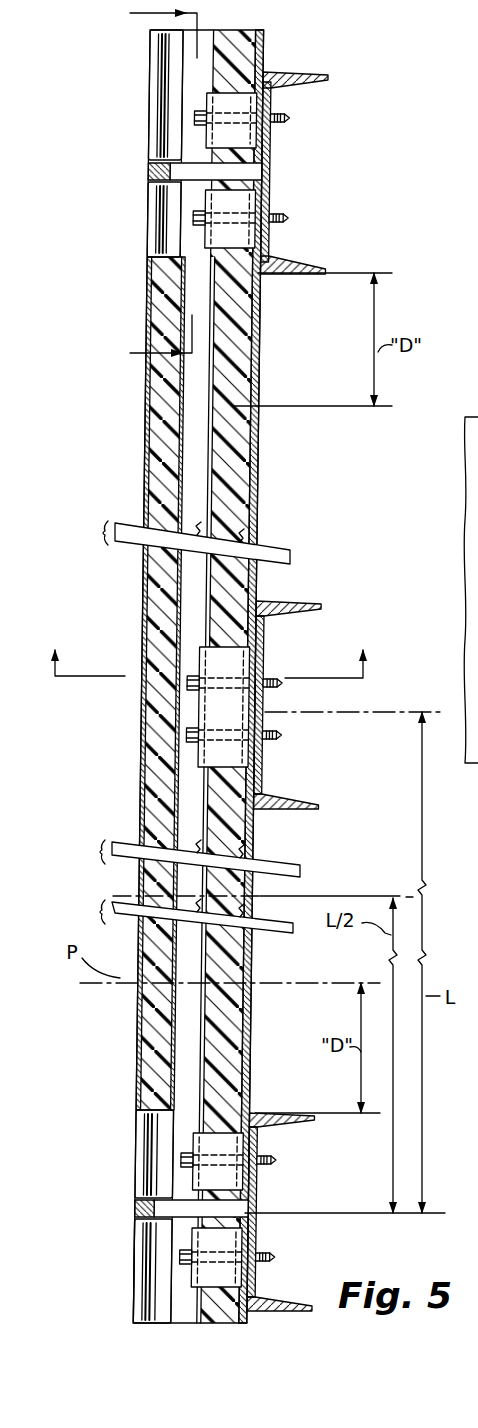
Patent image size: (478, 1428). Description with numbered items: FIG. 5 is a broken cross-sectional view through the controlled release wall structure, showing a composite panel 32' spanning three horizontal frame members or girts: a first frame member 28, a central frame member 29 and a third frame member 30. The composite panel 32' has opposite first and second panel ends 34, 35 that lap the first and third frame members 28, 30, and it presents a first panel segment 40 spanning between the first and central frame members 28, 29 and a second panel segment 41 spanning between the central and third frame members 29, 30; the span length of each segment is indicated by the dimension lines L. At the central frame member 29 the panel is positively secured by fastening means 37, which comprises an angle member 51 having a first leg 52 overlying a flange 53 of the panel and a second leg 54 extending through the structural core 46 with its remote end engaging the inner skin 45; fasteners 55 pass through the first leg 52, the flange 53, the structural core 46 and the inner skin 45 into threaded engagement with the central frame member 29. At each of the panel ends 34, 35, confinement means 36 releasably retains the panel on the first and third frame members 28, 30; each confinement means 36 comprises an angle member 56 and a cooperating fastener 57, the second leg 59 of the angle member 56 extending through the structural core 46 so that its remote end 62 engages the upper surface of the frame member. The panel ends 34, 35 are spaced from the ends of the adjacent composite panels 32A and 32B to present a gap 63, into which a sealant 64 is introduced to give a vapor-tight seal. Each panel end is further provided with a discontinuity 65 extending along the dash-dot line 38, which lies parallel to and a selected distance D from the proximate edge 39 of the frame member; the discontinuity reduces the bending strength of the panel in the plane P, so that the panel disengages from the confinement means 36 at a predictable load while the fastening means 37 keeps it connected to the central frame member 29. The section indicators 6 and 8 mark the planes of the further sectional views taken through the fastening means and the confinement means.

The section line 6- 6 is at (204, 645).
The section line 8- 8 is at (152, 182).
The first frame member 28 is at (265, 1300).
The central frame member 29 is at (293, 612).
The third frame member 30 is at (300, 74).
The composite panel 32A is at (146, 62).
The composite panel 32B is at (130, 1304).
The composite panel 32' is at (118, 683).
The first panel end 34 is at (150, 88).
The second panel end 35 is at (150, 255).
The confinement means 36 is at (197, 98).
The fastening means 37 is at (189, 758).
The line 38 is at (322, 407).
The proximate edge 39 is at (296, 275).
The first panel segment 40 is at (115, 908).
The second panel segment 41 is at (145, 410).
The inner skin 45 is at (248, 763).
The structural core 46 is at (234, 833).
The angle member 51 is at (238, 718).
The first leg 52 is at (196, 662).
The flange 53 is at (205, 582).
The second leg 54 is at (246, 665).
The fasteners 55 is at (197, 735).
The angle member 56 is at (259, 204).
The fastener 57 is at (196, 217).
The second leg 59 is at (247, 136).
The remote end 62 is at (256, 113).
The gap 63 is at (245, 172).
The sealant 64 is at (152, 172).
The discontinuity 65 is at (265, 403).